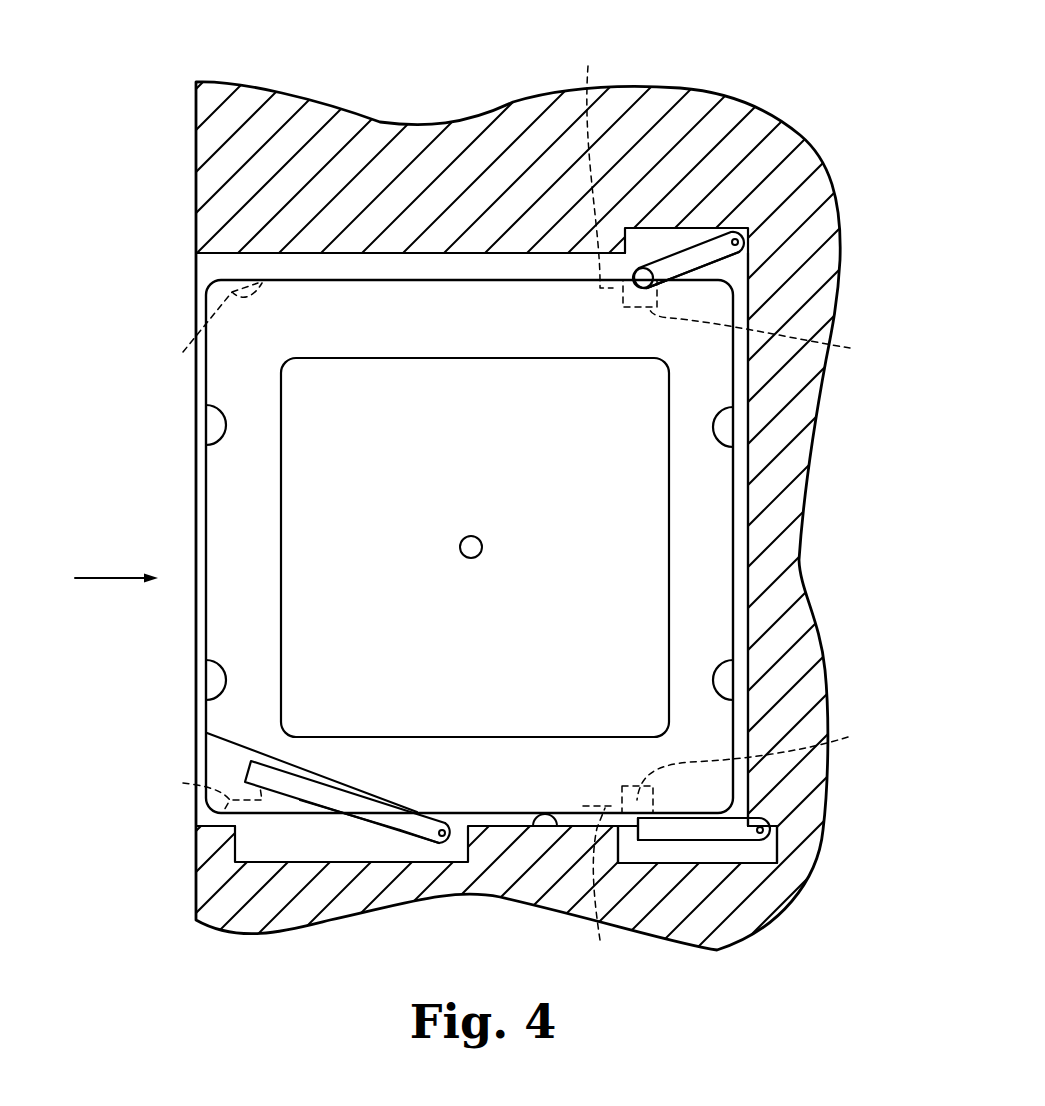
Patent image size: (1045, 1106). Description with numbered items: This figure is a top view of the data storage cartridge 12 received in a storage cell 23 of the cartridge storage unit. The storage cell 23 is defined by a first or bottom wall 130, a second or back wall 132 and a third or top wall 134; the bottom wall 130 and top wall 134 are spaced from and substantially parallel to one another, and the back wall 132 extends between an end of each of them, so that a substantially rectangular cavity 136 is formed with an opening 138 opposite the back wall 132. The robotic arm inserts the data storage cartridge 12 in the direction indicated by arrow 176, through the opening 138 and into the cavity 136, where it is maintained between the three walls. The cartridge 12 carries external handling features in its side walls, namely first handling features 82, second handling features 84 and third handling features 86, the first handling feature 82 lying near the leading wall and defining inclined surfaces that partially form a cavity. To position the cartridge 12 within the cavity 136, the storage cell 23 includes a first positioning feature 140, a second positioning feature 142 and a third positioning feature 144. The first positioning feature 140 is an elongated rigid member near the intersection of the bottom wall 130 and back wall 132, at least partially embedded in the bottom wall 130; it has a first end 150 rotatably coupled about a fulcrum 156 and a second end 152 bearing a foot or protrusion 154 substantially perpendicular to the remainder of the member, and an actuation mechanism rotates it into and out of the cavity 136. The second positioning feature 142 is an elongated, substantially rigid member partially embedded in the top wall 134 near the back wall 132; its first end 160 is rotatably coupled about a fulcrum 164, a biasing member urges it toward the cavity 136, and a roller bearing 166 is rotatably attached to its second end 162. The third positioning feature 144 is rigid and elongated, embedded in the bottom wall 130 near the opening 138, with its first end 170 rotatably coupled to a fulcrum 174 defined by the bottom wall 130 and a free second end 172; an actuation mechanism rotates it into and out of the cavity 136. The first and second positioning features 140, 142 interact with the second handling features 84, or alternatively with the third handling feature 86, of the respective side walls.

The storage cell 23 is at (170, 78).
The data storage cartridge 12 is at (228, 508).
The back wall 132 is at (742, 552).
The top wall 134 is at (226, 268).
The cavity 136 is at (228, 272).
The opening 138 is at (185, 834).
The bottom wall 130 is at (541, 829).
The first end 150 is at (778, 861).
The arrow 176 is at (103, 580).
The second positioning feature 142 is at (697, 233).
The roller bearing 166 is at (643, 267).
The fulcrum 164 is at (740, 241).
The first end 160 is at (709, 258).
The second end 162 is at (670, 275).
The second end 172 is at (252, 767).
The fulcrum 174 is at (443, 836).
The first end 170 is at (421, 834).
The third positioning feature 144 is at (340, 834).
The first positioning feature 140 is at (717, 858).
The fulcrum 156 is at (762, 834).
The protrusion 154 is at (642, 838).
The second end 152 is at (747, 834).
The first handling feature 82 is at (201, 547).
The second handling feature 84 is at (732, 546).
The third handling feature 86 is at (595, 502).